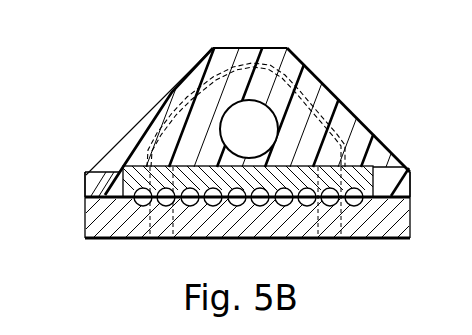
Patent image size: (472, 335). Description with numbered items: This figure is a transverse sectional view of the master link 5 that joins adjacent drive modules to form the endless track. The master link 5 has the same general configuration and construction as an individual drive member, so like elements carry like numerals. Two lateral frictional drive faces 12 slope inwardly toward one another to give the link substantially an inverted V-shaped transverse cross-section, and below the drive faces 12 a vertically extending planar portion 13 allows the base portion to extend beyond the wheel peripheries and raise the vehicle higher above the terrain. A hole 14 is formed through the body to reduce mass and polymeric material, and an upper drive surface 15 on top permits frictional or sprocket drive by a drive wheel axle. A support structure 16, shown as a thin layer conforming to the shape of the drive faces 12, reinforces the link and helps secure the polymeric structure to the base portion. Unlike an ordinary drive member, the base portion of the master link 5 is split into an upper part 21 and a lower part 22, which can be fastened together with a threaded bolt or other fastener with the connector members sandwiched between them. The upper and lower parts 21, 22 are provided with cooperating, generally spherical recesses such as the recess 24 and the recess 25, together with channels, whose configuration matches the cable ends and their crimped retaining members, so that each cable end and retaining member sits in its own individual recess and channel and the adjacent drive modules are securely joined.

The master link 5 is at (348, 70).
The drive face 12 is at (139, 119).
The vertically extending planar portion 13 is at (85, 191).
The hole 14 is at (238, 128).
The upper drive surface 15 is at (248, 48).
The support structure 16 is at (296, 90).
The upper part of base portion 21 is at (378, 172).
The lower part of base portion 22 is at (387, 224).
The recess 24 is at (127, 162).
The recess 25 is at (130, 206).